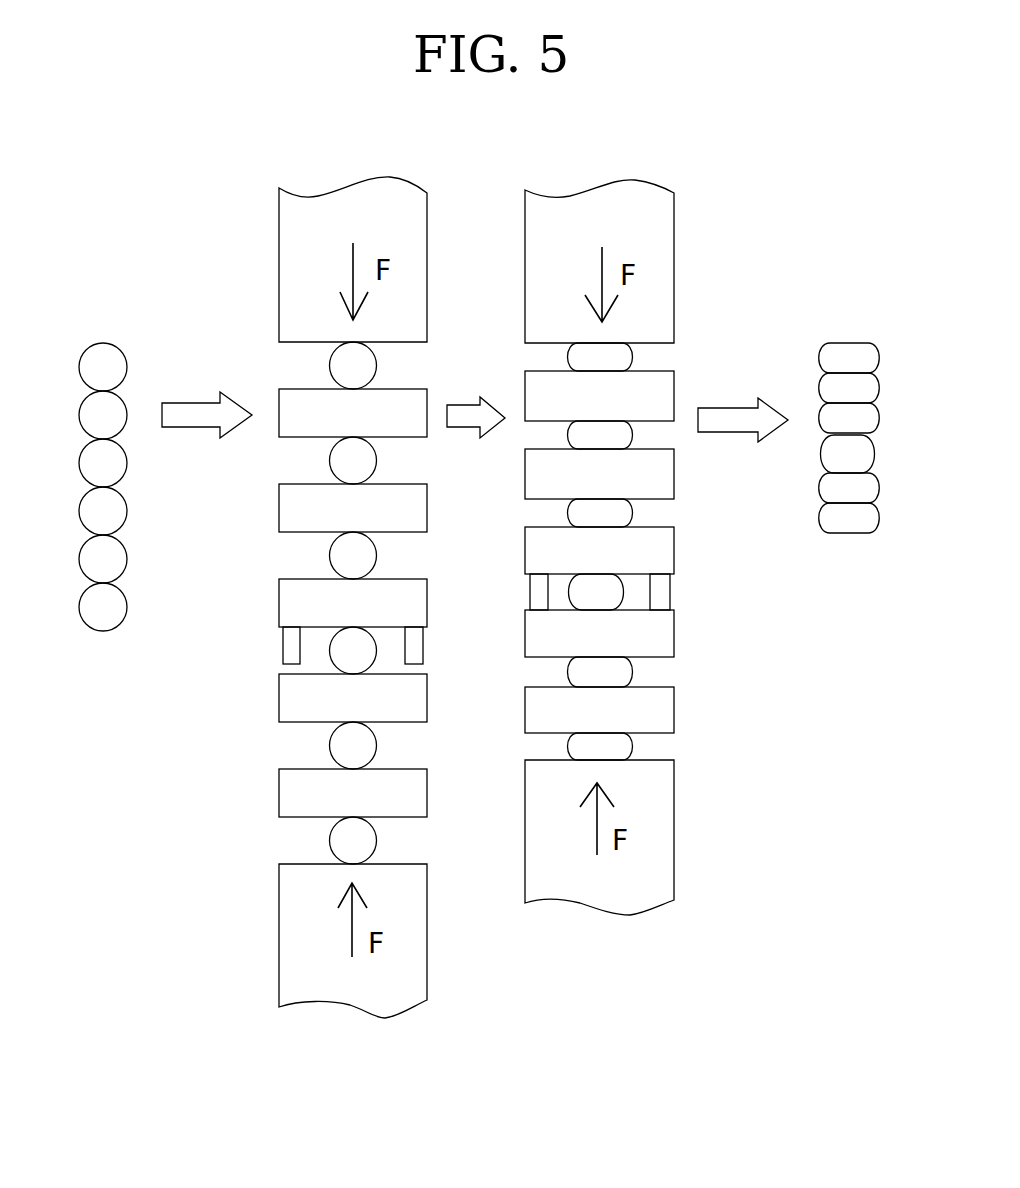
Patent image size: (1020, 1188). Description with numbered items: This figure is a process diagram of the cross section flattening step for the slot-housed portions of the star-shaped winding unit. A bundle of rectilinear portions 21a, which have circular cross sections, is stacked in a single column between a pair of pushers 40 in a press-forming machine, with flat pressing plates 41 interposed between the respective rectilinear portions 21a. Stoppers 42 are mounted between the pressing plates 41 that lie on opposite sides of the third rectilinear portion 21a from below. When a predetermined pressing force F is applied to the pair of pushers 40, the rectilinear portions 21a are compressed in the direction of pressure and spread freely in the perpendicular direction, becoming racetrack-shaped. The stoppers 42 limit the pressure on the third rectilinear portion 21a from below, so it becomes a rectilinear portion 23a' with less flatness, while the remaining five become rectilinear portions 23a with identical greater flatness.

The pusher 40 is at (290, 254).
The pressing plate 41 is at (292, 790).
The stopper 42 is at (292, 645).
The rectilinear portion 21a is at (117, 552).
The rectilinear portion 23a is at (724, 546).
The rectilinear portion 23a' is at (722, 522).